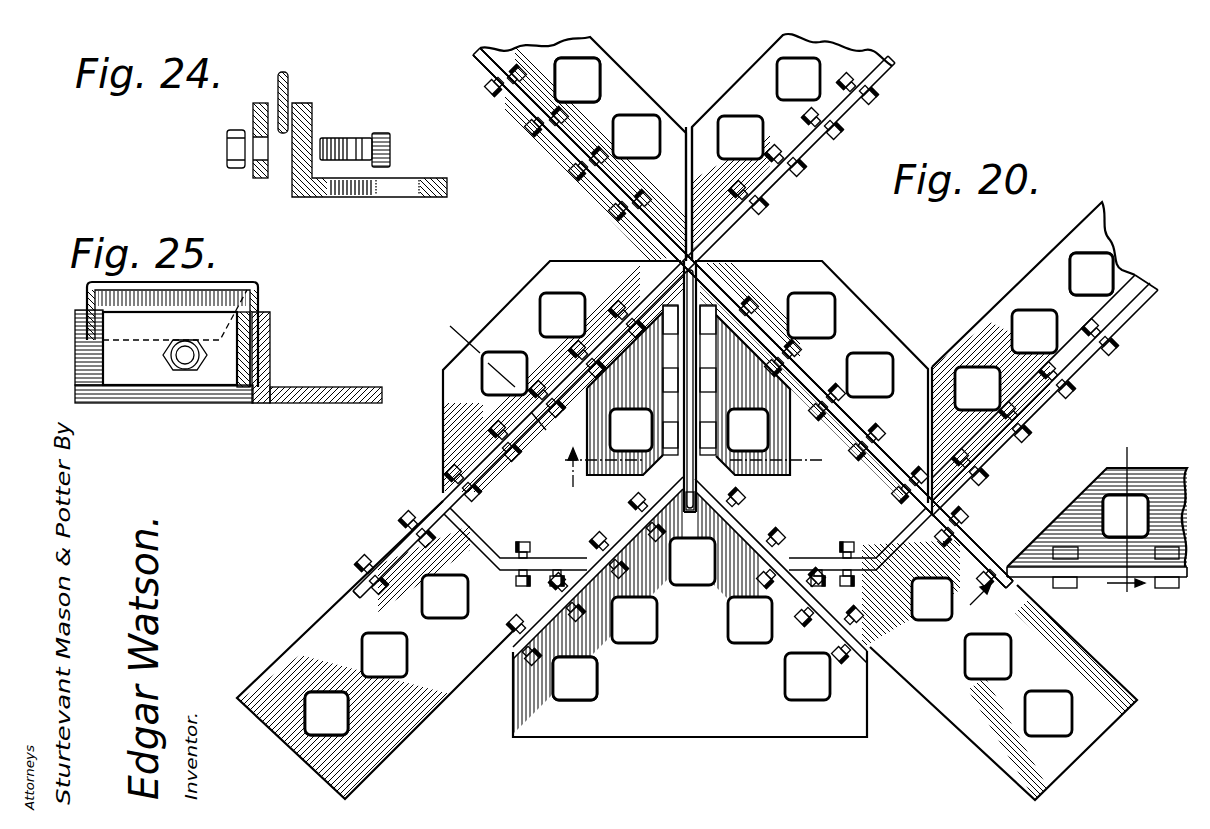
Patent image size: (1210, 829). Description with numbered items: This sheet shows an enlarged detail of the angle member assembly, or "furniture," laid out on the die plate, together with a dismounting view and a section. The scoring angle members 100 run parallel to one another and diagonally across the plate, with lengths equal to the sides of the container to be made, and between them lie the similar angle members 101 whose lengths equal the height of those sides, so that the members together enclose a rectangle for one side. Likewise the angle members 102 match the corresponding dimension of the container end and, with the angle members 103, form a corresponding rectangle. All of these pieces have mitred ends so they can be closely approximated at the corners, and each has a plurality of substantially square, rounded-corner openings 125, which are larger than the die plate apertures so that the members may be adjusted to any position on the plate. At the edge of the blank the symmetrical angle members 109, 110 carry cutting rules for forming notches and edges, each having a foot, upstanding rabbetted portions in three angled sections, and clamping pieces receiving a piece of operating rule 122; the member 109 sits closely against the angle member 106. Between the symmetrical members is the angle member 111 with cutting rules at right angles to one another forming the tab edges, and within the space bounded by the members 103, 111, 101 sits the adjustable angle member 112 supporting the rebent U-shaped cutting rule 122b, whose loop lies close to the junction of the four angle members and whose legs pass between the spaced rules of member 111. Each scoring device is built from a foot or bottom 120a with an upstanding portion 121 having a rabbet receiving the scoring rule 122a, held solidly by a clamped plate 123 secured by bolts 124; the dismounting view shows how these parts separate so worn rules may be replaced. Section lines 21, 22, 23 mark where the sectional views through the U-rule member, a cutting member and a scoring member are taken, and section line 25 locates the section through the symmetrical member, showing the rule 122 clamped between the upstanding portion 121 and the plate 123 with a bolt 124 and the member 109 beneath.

In FIG. 20, the angle member 100 is at (745, 83).
In FIG. 20, the angle member 101 is at (857, 308).
In FIG. 20, the angle member 102 is at (610, 73).
In FIG. 20, the angle member 103 is at (527, 298).
In FIG. 20, the angle member 106 is at (1067, 512).
In FIG. 25, the symmetrical angle member 109 is at (321, 404).
In FIG. 20, the symmetrical angle member 109 is at (967, 712).
In FIG. 20, the symmetrical angle member 110 is at (326, 631).
In FIG. 20, the angle member 111 is at (702, 697).
In FIG. 20, the adjustable angle member 112 is at (643, 460).
In FIG. 24, the foot or bottom 120a is at (308, 202).
In FIG. 20, the foot or bottom 120a is at (727, 103).
In FIG. 24, the upstanding portion 121 is at (293, 181).
In FIG. 25, the upstanding portion 121 is at (77, 359).
In FIG. 20, the upstanding portion 121 is at (800, 383).
In FIG. 25, the cutting rule 122 is at (262, 303).
In FIG. 20, the cutting rule 122 is at (885, 545).
In FIG. 24, the scoring rule 122a is at (289, 95).
In FIG. 25, the scoring rule 122a is at (247, 290).
In FIG. 20, the scoring rule 122a is at (540, 118).
In FIG. 20, the U-shaped cutting rule 122b is at (684, 400).
In FIG. 24, the plate 123 is at (253, 115).
In FIG. 25, the plate 123 is at (130, 374).
In FIG. 20, the plate 123 is at (563, 154).
In FIG. 24, the bolt 124 is at (355, 141).
In FIG. 25, the bolt 124 is at (186, 366).
In FIG. 20, the bolt 124 is at (585, 180).
In FIG. 24, the opening 125 is at (407, 192).
In FIG. 20, the opening 125 is at (630, 117).
In FIG. 20, the section line 21 is at (698, 467).
In FIG. 20, the section line 22 is at (1126, 521).
In FIG. 20, the section line 23 is at (505, 381).
In FIG. 20, the section line 25 is at (890, 492).